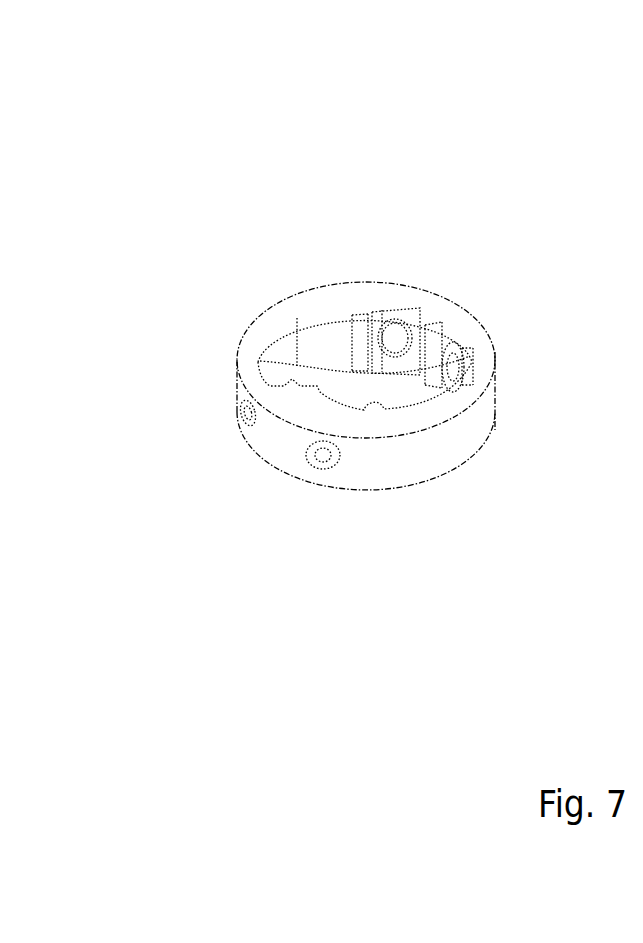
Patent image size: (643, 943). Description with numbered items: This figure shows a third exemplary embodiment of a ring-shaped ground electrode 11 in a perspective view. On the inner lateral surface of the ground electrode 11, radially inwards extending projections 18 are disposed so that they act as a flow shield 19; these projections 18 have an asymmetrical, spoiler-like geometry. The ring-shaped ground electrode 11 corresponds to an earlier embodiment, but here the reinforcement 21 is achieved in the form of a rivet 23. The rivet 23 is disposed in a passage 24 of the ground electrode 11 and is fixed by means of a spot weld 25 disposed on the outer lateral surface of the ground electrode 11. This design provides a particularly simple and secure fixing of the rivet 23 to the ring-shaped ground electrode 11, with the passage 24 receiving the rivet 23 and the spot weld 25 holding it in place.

The ground electrode 11 is at (473, 430).
The projections 18 is at (365, 375).
The flow shield 19 is at (361, 330).
The reinforcement 21 is at (407, 246).
The rivet 23 is at (340, 405).
The passage 24 is at (264, 448).
The spot weld 25 is at (325, 456).